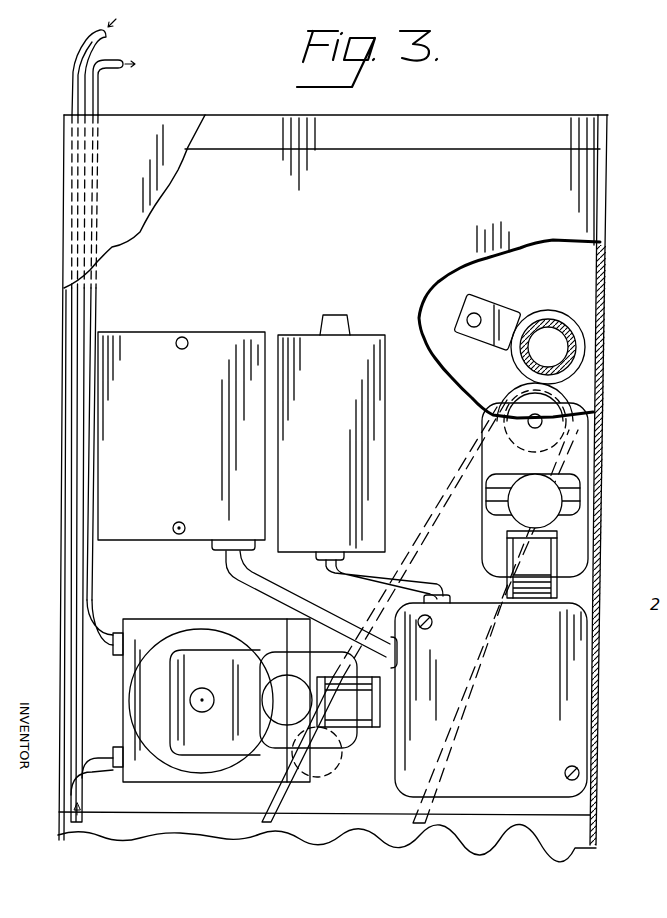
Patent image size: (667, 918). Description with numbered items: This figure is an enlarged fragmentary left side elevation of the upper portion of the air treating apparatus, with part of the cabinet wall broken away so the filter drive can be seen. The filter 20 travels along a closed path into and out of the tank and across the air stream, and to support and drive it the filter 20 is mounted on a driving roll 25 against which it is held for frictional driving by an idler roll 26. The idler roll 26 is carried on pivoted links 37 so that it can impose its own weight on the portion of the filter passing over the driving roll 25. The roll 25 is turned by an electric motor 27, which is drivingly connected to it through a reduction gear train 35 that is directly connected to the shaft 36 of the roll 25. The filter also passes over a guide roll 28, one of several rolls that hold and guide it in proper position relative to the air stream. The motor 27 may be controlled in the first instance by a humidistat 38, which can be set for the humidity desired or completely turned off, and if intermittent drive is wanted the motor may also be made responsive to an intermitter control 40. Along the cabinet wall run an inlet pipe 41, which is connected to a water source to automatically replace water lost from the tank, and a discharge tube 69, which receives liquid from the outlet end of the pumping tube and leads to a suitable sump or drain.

The filter 20 is at (567, 400).
The driving roll 25 is at (565, 449).
The idler roll 26 is at (583, 335).
The electric motor 27 is at (545, 563).
The guide roll 28 is at (342, 774).
The reduction gear train 35 is at (590, 478).
The shaft 36 is at (526, 425).
The pivoted links 37 is at (493, 305).
The humidistat 38 is at (331, 437).
The intermitter control 40 is at (181, 441).
The inlet pipe 41 is at (72, 82).
The discharge tube 69 is at (99, 93).